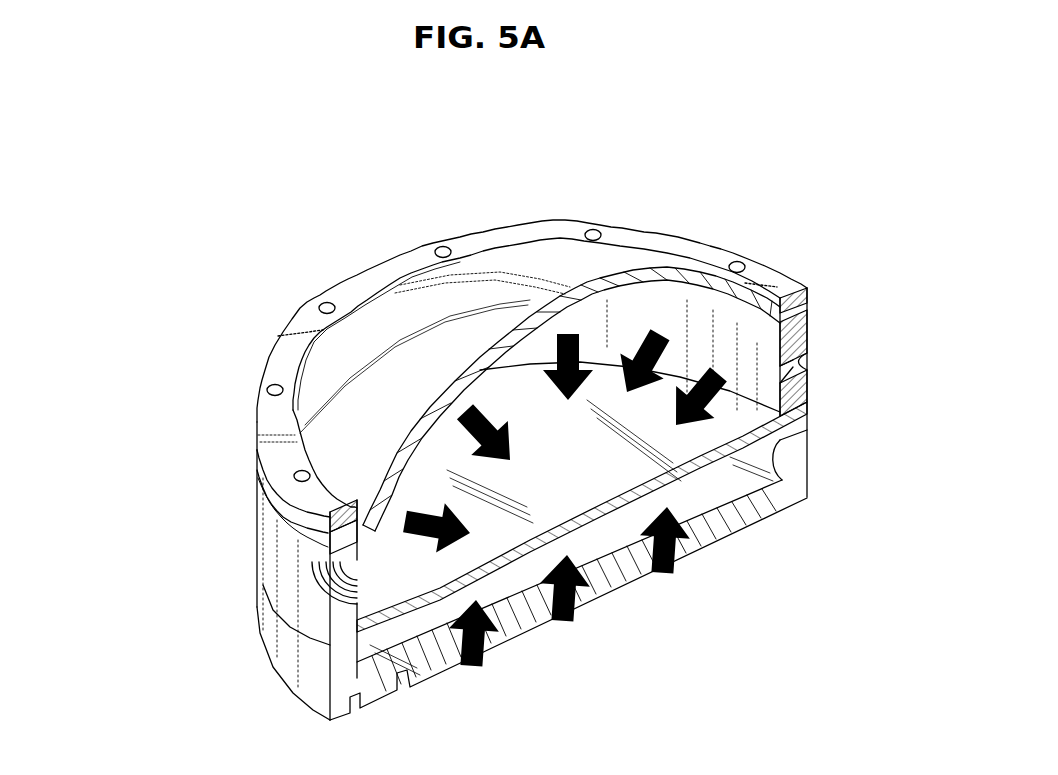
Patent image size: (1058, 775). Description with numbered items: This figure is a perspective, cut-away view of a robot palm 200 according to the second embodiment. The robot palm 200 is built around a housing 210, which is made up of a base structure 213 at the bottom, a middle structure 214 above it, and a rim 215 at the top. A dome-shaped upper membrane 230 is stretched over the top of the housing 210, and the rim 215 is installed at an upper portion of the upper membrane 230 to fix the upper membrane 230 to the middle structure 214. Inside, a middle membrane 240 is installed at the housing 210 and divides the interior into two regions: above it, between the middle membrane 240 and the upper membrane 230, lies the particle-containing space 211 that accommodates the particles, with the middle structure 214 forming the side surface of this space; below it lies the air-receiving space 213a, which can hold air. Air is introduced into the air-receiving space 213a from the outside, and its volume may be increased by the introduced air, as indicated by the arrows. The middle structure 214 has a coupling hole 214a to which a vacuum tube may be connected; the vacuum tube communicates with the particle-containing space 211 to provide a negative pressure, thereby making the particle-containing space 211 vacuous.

The robot palm 200 is at (650, 178).
The housing 210 is at (150, 313).
The particle-containing space 211 is at (585, 448).
The base structure 213 is at (260, 587).
The air-receiving space 213a is at (703, 473).
The middle structure 214 is at (260, 507).
The coupling hole 214a is at (803, 357).
The rim 215 is at (272, 345).
The upper membrane 230 is at (807, 301).
The middle membrane 240 is at (807, 417).